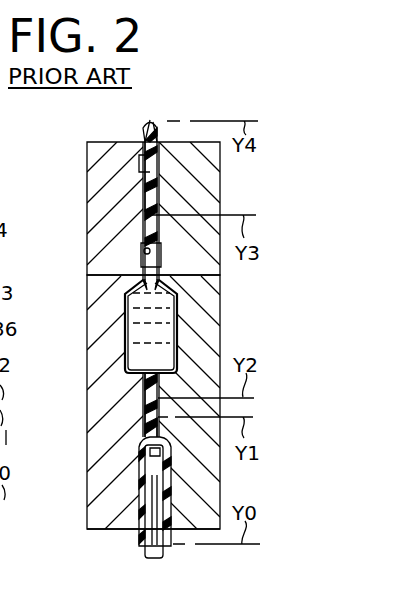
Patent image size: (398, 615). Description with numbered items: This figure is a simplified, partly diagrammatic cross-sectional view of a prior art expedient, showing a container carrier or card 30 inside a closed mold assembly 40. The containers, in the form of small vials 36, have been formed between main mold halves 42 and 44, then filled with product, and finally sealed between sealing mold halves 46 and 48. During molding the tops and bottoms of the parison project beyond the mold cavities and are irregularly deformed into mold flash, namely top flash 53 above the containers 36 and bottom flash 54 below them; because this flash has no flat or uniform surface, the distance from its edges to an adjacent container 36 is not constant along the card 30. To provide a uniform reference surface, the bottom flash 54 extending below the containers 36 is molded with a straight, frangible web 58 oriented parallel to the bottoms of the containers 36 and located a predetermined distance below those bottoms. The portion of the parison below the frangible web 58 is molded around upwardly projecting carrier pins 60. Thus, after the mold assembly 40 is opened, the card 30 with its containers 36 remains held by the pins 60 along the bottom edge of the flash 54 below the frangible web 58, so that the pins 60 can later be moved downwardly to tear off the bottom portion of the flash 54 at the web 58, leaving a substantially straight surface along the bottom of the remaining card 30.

The container carrier or card 30 is at (130, 128).
The vial 36 is at (167, 334).
The mold assembly 40 is at (76, 541).
The main mold half 42 is at (108, 481).
The main mold half 44 is at (198, 491).
The sealing mold half 46 is at (108, 239).
The sealing mold half 48 is at (200, 191).
The top flash 53 is at (163, 122).
The bottom flash 54 is at (165, 546).
The frangible web 58 is at (147, 408).
The carrier pin 60 is at (145, 553).